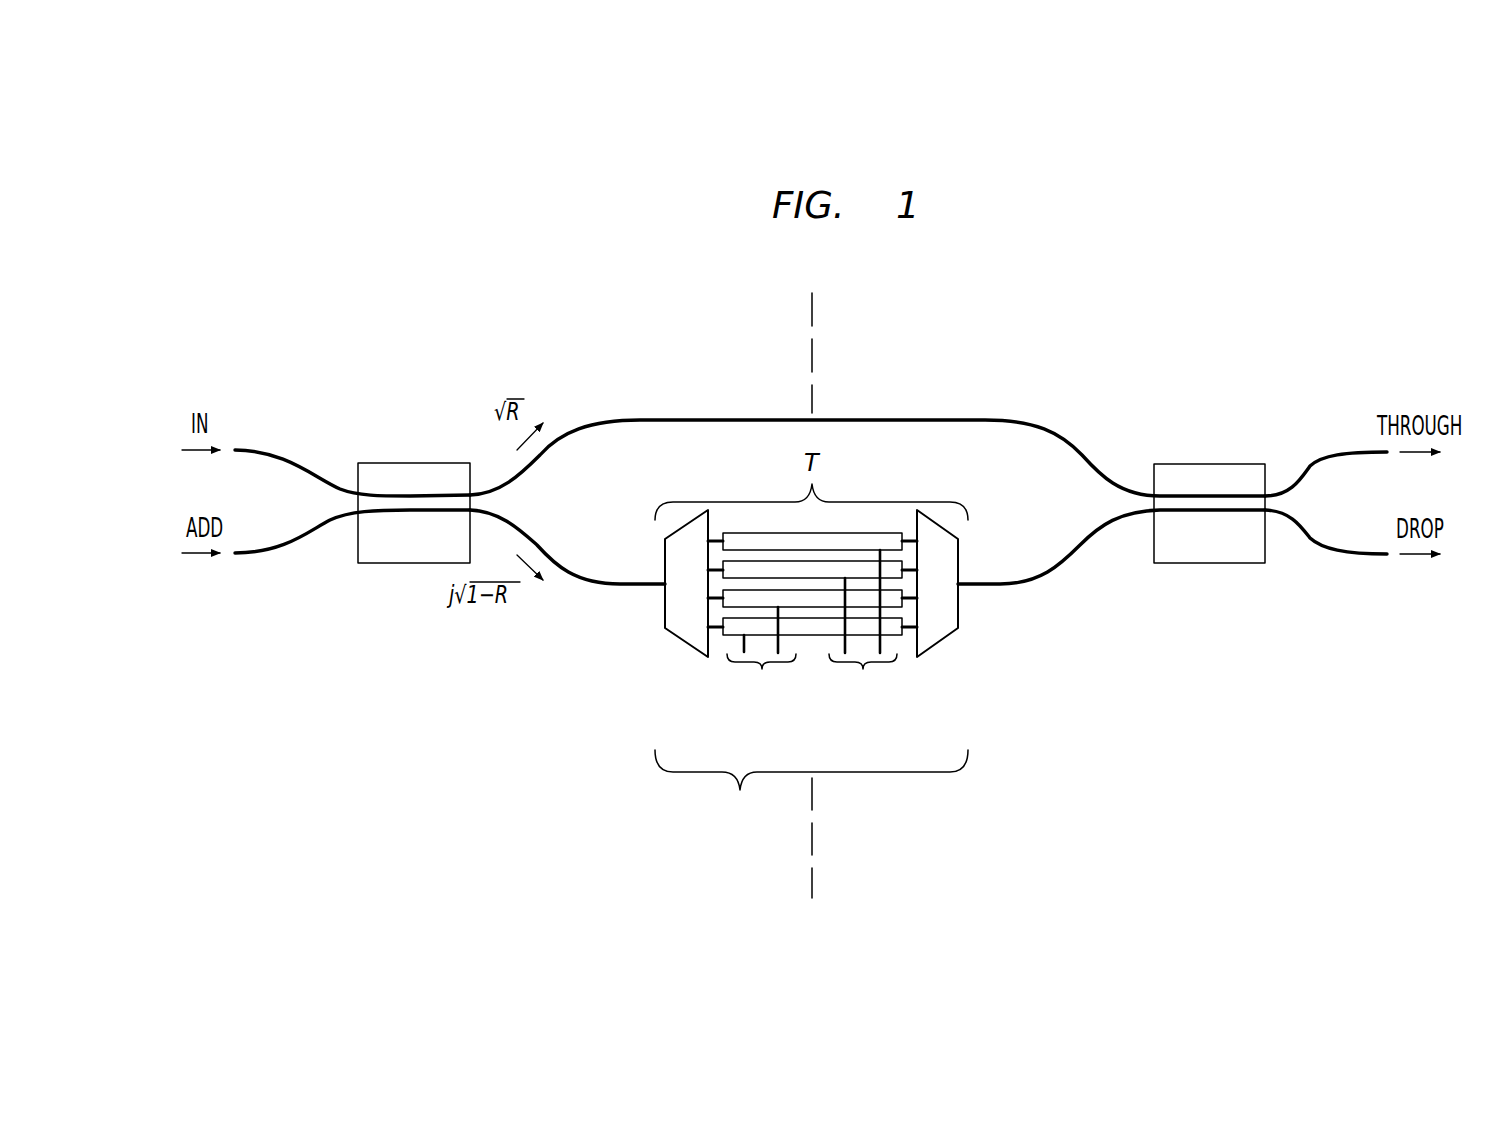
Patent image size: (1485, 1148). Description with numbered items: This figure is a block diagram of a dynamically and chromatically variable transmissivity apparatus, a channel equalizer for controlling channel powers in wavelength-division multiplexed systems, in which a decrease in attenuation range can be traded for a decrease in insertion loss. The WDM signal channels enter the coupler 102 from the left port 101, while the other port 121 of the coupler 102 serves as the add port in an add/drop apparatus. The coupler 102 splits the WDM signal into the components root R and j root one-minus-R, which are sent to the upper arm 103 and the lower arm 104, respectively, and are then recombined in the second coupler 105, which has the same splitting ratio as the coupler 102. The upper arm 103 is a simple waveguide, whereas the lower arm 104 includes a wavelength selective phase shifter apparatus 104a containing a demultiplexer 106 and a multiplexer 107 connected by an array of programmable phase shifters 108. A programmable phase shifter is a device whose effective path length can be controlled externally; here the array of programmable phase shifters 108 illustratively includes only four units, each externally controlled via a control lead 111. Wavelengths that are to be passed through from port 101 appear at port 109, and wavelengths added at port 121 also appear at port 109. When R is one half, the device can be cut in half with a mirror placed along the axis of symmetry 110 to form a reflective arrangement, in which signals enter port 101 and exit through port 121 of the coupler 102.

The left port 101 is at (330, 484).
The port 121 is at (326, 534).
The coupler 102 is at (411, 463).
The upper arm 103 is at (650, 418).
The lower arm 104 is at (602, 579).
The wavelength selective phase shifter apparatus 104a is at (811, 785).
The second coupler 105 is at (1208, 463).
The demultiplexer 106 is at (683, 648).
The multiplexer 107 is at (940, 647).
The array of programmable phase shifters 108 is at (812, 650).
The port 109 is at (1280, 480).
The axis of symmetry 110 is at (813, 352).
The control lead 111 is at (812, 625).